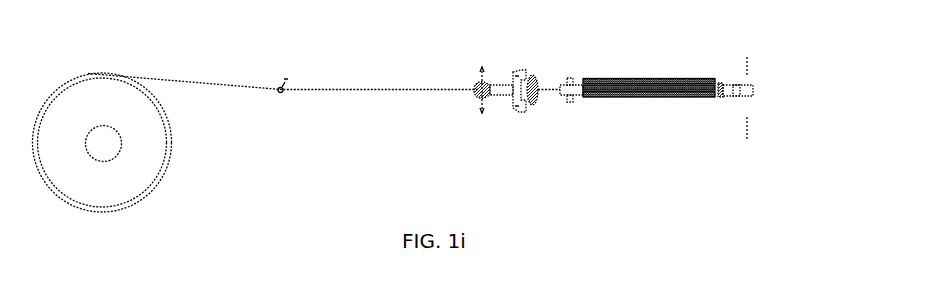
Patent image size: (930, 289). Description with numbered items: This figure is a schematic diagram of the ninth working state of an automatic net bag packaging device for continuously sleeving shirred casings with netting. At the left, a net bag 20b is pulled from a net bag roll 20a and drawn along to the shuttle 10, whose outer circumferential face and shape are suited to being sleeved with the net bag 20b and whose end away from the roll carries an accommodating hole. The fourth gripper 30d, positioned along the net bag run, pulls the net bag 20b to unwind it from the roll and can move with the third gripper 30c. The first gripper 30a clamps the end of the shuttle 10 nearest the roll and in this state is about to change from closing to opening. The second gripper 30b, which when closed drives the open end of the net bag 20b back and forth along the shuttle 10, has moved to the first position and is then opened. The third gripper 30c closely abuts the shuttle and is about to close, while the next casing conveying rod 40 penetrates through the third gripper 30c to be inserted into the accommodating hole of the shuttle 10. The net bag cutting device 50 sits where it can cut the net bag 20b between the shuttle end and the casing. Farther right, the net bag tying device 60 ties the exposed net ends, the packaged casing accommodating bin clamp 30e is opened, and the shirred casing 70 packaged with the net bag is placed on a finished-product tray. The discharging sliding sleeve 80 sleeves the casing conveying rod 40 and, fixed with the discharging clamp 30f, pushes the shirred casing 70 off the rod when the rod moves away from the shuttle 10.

The shuttle 10 is at (517, 110).
The net bag roll 20a is at (105, 105).
The net bag 20b is at (482, 107).
The first gripper 30a is at (479, 82).
The second gripper 30b is at (517, 83).
The third gripper 30c is at (533, 77).
The fourth gripper 30d is at (281, 85).
The packaged casing accommodating bin clamp 30e is at (660, 80).
The discharging clamp 30f is at (747, 140).
The casing conveying rod 40 is at (820, 120).
The net bag cutting device 50 is at (582, 172).
The net bag tying device 60 is at (572, 78).
The shirred casing 70 is at (573, 93).
The discharging sliding sleeve 80 is at (722, 85).